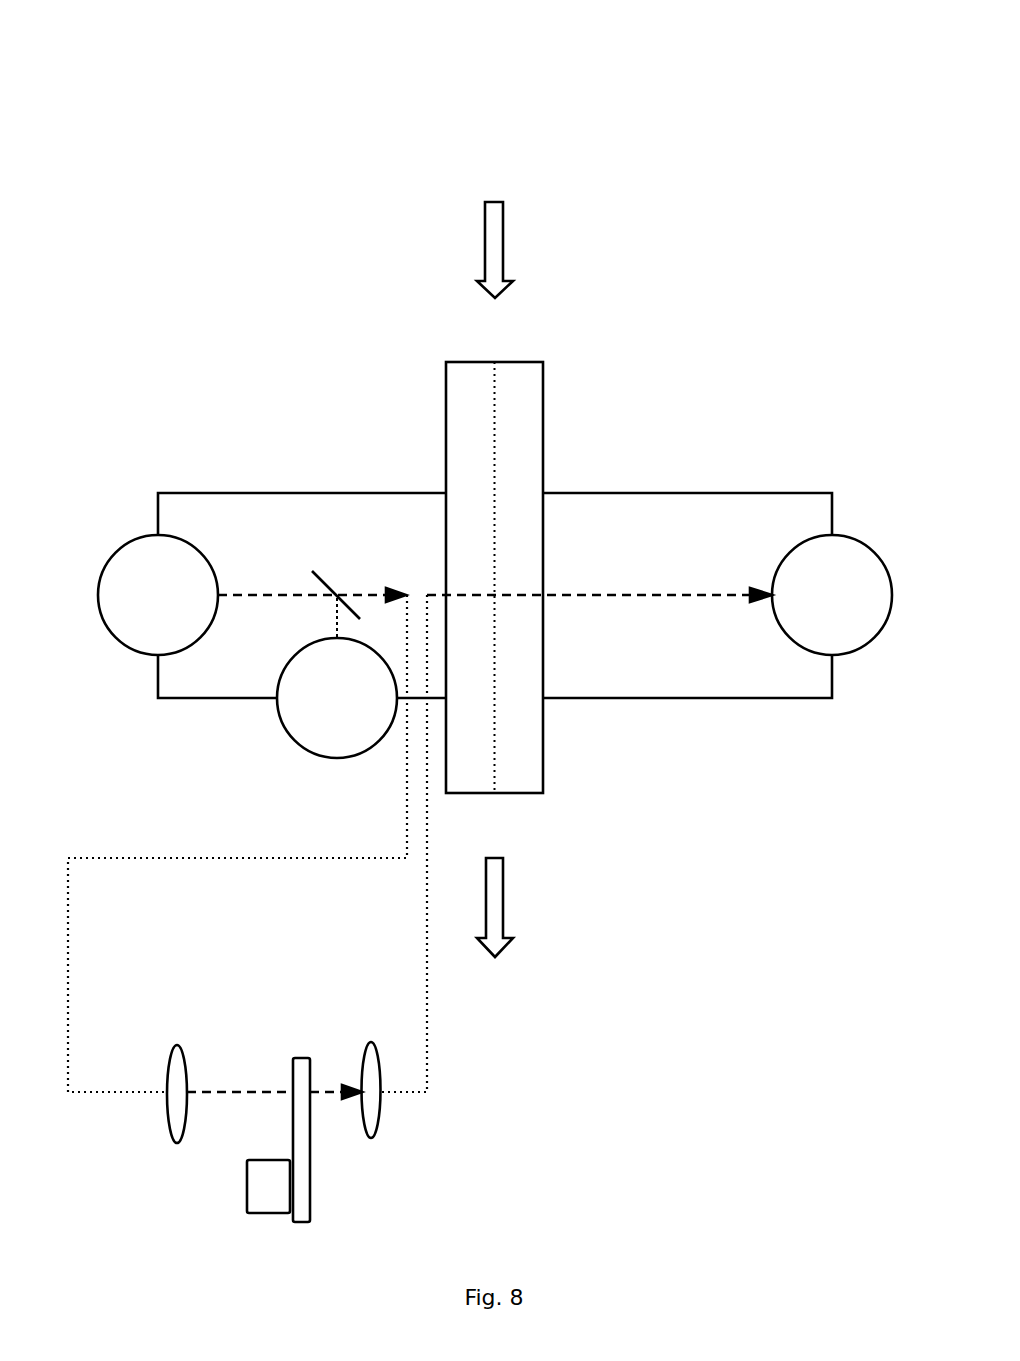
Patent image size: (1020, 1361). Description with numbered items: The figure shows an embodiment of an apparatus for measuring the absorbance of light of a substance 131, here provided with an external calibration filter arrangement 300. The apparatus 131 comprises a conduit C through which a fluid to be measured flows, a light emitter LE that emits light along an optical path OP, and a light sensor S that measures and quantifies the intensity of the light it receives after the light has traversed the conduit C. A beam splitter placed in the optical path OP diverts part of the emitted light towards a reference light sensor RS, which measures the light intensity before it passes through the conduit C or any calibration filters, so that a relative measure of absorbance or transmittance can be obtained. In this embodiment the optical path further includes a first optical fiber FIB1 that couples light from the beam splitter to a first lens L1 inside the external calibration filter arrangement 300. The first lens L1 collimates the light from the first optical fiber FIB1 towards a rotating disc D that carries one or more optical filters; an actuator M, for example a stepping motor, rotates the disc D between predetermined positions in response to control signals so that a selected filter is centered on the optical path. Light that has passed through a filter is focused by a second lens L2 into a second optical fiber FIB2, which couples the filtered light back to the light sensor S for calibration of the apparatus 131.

The apparatus for measuring the absorbance of light of a substance 131 is at (636, 140).
The conduit C is at (520, 398).
The optical path OP is at (361, 586).
The light emitter LE is at (158, 595).
The reference light sensor RS is at (337, 698).
The light sensor S is at (832, 595).
The first optical fiber FIB1 is at (118, 850).
The second optical fiber FIB2 is at (436, 993).
The first lens L1 is at (179, 1029).
The second lens L2 is at (380, 1142).
The rotating disc D is at (302, 1049).
The actuator M is at (268, 1186).
The external calibration filter arrangement 300 is at (319, 1100).